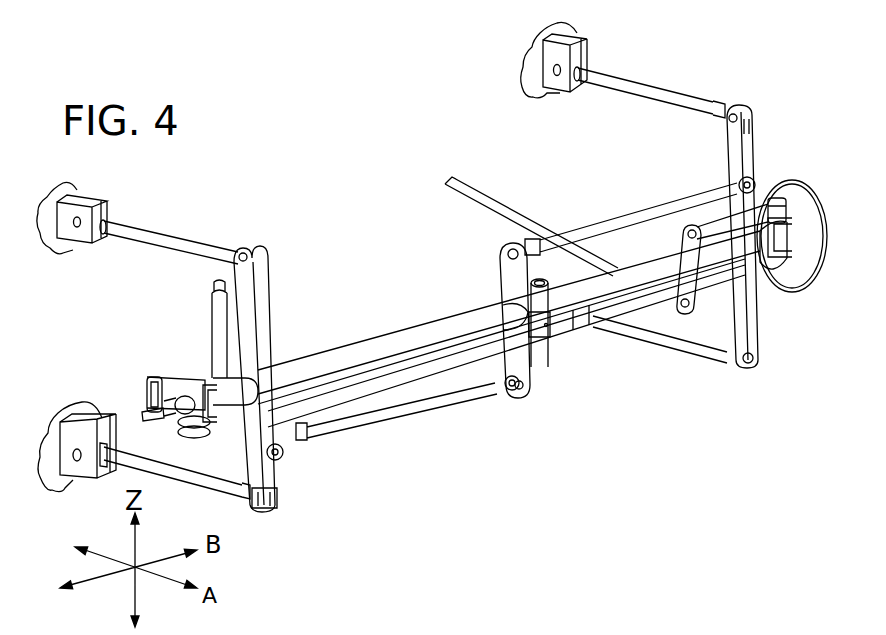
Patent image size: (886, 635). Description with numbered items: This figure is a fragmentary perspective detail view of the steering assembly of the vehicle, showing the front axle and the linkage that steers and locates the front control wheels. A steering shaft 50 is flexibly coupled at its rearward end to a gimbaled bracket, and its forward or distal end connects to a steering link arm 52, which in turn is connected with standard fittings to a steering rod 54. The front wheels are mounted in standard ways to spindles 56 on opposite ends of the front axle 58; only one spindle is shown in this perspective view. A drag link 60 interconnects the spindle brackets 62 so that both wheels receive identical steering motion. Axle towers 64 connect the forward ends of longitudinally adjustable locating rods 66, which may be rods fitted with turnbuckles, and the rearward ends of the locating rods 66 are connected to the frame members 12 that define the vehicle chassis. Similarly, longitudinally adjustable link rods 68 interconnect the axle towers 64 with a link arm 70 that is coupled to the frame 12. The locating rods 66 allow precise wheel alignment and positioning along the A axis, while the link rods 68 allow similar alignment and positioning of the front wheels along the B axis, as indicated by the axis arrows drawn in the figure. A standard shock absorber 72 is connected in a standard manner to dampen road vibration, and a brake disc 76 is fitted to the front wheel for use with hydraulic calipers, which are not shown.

The frame members 12 is at (545, 352).
The steering shaft 50 is at (477, 193).
The steering link arm 52 is at (683, 270).
The steering rod 54 is at (713, 228).
The spindle 56 is at (176, 405).
The front axle 58 is at (345, 357).
The drag link 60 is at (360, 388).
The spindle brackets 62 is at (198, 385).
The axle towers 64 is at (266, 308).
The locating rods 66 is at (158, 232).
The link rods 68 is at (390, 417).
The link arm 70 is at (513, 278).
The shock absorbers 72 is at (220, 307).
The discs 76 is at (805, 203).